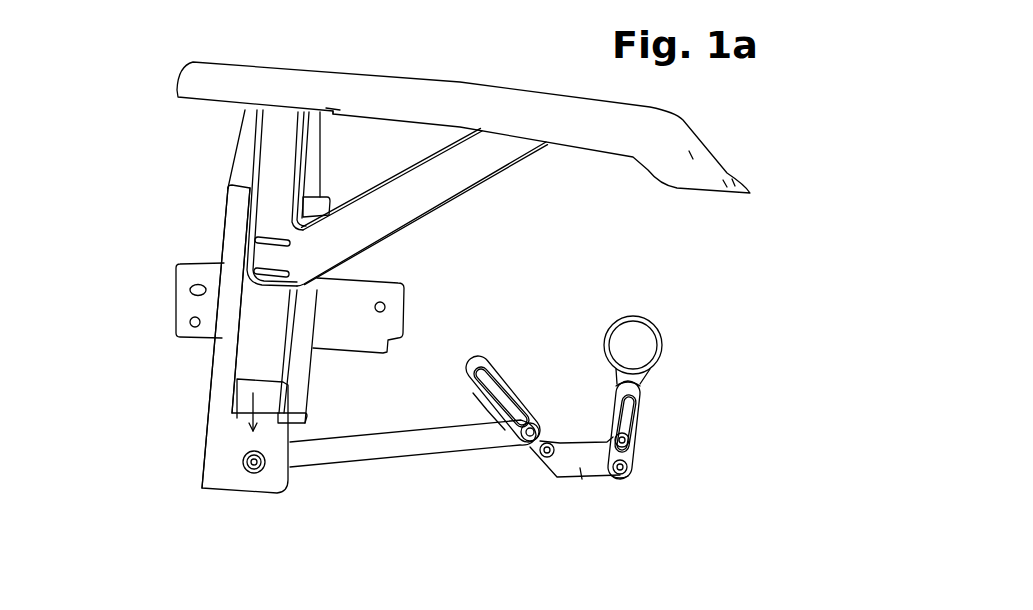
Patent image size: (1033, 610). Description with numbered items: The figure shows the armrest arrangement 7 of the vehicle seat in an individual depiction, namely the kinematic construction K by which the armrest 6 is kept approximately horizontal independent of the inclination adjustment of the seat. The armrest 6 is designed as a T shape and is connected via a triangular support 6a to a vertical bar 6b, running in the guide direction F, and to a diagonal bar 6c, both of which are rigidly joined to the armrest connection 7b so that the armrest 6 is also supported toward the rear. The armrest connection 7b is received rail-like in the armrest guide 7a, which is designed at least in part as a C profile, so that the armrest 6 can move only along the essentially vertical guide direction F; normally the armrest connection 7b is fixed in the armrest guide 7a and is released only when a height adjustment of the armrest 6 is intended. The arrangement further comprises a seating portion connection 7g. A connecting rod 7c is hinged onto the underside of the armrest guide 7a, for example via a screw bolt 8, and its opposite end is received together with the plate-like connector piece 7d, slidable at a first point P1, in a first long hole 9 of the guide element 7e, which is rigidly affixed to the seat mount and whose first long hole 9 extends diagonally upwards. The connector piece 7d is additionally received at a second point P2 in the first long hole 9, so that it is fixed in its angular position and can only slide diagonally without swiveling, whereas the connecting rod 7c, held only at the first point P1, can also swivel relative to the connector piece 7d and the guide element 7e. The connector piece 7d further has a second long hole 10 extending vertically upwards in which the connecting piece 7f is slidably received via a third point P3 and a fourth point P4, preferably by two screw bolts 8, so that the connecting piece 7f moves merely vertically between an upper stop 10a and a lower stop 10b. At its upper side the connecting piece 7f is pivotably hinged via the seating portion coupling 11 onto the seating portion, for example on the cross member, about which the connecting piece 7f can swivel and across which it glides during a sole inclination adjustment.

The armrest 6 is at (232, 77).
The triangular support 6a is at (333, 113).
The vertical bar 6b is at (280, 153).
The diagonal bar 6c is at (450, 187).
The armrest arrangement 7 is at (128, 200).
The armrest guide 7a is at (217, 410).
The armrest connection 7b is at (257, 352).
The connecting rod 7c is at (370, 447).
The connector piece 7d is at (578, 468).
The guide element 7e is at (473, 393).
The connecting piece 7f is at (653, 377).
The seating portion connection 7g is at (192, 277).
The screw bolt 8 is at (254, 473).
The first long hole 9 is at (493, 383).
The second long hole 10 is at (627, 413).
The upper stop 10a is at (640, 393).
The lower stop 10b is at (628, 476).
The seating portion coupling 11 is at (631, 345).
The guide direction F is at (258, 413).
The kinematic construction K is at (428, 320).
The first point P1 is at (520, 438).
The second point P2 is at (547, 457).
The third point P3 is at (615, 437).
The fourth point P4 is at (620, 478).